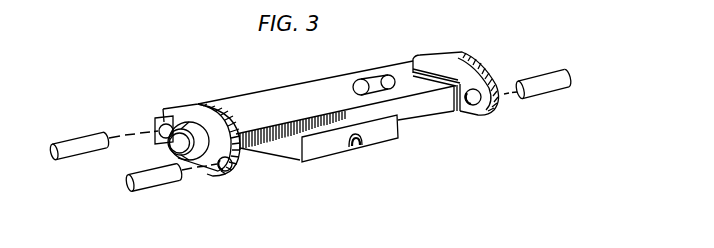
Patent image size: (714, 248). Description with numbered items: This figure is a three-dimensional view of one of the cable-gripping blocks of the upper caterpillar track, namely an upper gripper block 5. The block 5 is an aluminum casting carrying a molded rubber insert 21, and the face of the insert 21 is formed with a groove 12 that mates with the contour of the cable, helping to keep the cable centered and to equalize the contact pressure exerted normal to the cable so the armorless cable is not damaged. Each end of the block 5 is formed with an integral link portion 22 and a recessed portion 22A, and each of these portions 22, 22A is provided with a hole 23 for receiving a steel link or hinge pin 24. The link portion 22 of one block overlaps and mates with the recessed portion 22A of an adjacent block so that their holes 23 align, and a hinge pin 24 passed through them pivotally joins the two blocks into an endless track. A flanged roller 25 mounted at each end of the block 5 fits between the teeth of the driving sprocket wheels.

The upper gripper block 5 is at (292, 68).
The groove 12 is at (358, 148).
The rubber insert 21 is at (385, 133).
The link portion 22 is at (247, 173).
The recessed portion 22A is at (395, 65).
The hole 23 is at (152, 125).
The hinge pin 24 is at (72, 142).
The flanged roller 25 is at (193, 137).